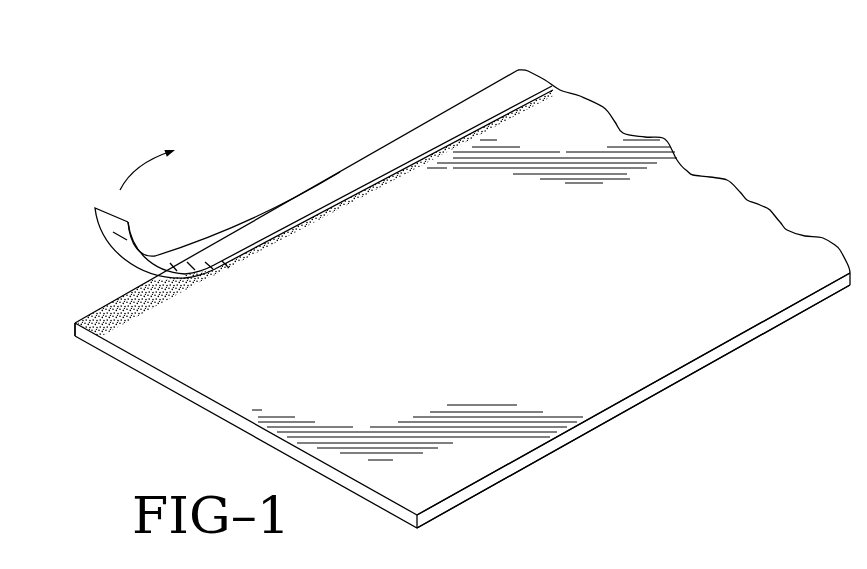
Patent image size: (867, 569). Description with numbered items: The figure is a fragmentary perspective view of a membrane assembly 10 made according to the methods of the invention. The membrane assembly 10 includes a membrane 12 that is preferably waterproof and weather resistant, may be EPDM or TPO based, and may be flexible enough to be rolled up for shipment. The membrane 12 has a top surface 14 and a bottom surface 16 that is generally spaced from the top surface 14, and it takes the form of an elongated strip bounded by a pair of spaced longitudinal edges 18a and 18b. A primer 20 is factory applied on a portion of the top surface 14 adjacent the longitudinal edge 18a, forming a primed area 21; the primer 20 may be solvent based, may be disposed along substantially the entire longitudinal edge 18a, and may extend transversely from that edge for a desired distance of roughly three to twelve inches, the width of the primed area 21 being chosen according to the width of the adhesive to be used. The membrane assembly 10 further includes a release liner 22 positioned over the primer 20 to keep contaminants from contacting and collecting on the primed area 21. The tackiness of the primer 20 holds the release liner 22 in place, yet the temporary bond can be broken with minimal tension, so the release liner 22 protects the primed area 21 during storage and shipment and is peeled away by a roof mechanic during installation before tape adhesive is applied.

The membrane assembly 10 is at (84, 124).
The membrane 12 is at (732, 206).
The top surface 14 is at (747, 306).
The bottom surface 16 is at (673, 383).
The longitudinal edge 18a is at (75, 331).
The longitudinal edge 18b is at (518, 462).
The primer 20 is at (298, 211).
The primed area 21 is at (162, 304).
The release liner 22 is at (355, 182).